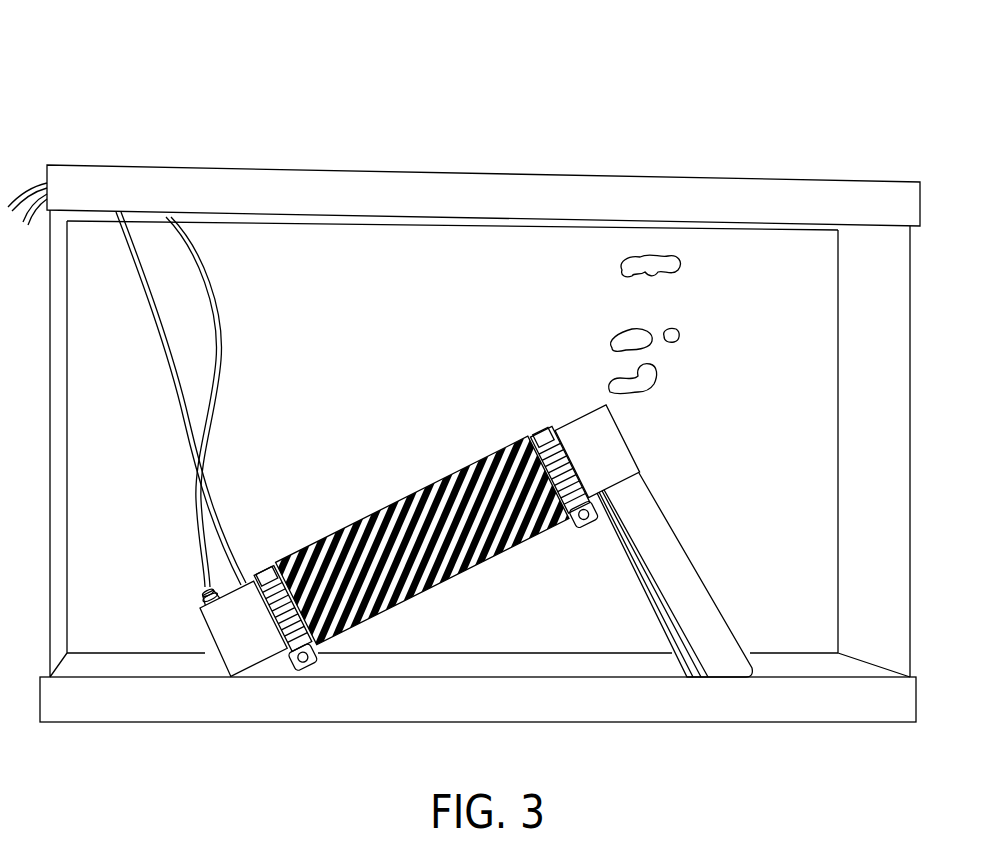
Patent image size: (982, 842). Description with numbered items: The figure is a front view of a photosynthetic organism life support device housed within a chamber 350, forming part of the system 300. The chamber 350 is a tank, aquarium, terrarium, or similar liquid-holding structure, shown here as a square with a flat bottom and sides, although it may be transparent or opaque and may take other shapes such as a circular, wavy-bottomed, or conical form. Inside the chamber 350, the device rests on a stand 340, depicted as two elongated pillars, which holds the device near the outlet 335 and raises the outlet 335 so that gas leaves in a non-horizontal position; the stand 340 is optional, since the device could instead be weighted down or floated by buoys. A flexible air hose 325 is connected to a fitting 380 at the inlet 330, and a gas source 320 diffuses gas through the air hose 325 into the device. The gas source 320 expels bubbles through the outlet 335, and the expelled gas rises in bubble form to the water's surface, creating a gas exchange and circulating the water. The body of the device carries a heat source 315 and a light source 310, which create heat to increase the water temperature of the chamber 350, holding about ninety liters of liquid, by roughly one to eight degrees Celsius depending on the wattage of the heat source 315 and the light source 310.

The system 300 is at (120, 86).
The chamber 350 is at (584, 164).
The gas source 320 is at (183, 425).
The flexible air hose 325 is at (197, 528).
The fitting 380 is at (190, 581).
The inlet 330 is at (181, 630).
The outlet 335 is at (652, 417).
The stand 340 is at (705, 519).
The light source 310 is at (427, 537).
The heat source 315 is at (531, 528).